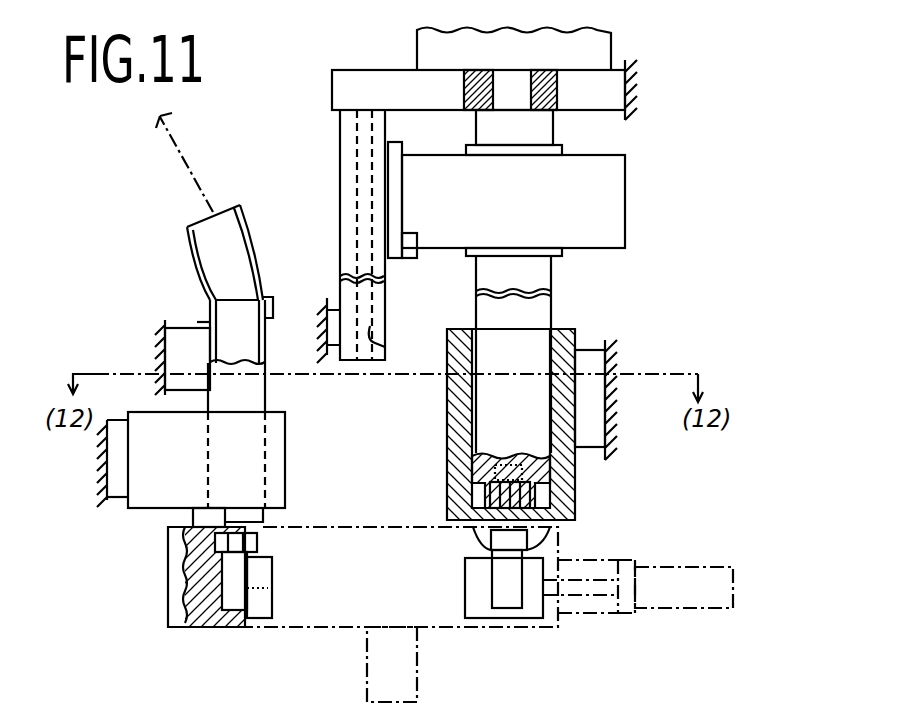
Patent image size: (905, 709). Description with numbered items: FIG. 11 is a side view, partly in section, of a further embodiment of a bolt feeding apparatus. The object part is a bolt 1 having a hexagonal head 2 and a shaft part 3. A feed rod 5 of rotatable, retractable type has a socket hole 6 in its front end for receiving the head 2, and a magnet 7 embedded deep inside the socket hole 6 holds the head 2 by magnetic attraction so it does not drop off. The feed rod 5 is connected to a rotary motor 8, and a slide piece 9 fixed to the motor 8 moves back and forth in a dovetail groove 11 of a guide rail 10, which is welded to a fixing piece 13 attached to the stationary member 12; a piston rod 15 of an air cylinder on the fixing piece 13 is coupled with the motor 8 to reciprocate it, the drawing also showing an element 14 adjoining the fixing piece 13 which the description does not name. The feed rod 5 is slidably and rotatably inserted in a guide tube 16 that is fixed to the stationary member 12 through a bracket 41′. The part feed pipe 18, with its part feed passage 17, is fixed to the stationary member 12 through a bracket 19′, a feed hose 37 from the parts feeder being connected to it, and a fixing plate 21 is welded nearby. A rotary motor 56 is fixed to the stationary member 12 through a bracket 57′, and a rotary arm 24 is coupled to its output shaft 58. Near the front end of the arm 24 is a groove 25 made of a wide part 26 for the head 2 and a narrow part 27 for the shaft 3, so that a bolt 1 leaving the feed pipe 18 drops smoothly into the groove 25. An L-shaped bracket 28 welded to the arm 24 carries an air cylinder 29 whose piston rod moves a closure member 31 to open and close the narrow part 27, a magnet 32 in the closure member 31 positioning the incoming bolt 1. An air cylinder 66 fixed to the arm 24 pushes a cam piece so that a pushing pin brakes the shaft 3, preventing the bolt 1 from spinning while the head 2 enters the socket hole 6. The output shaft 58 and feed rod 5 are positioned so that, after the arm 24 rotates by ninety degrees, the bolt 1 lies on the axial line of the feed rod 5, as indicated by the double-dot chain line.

The bolt 1 is at (269, 548).
The hexagonal head 2 is at (268, 543).
The shaft part 3 is at (230, 605).
The feed rod 5 is at (553, 308).
The socket hole 6 is at (530, 500).
The magnet 7 is at (516, 460).
The rotary motor 8 is at (625, 205).
The slide piece 9 is at (416, 258).
The guide rail 10 is at (387, 303).
The dovetail groove 11 is at (385, 347).
The stationary member 12 is at (633, 105).
The fixing piece 13 is at (332, 88).
The machine frame 14 is at (418, 45).
The piston rod 15 is at (535, 72).
The guide tube 16 is at (447, 428).
The part feed passage 17 is at (248, 340).
The part feed pipe 18 is at (265, 394).
The bracket 19′ is at (197, 327).
The fixing plate 21 is at (178, 337).
The rotary arm 24 is at (168, 588).
The groove 25 is at (273, 588).
The wide part 26 is at (203, 545).
The narrow part 27 is at (248, 610).
The L-shaped bracket 28 is at (588, 615).
The air cylinder 29 is at (698, 562).
The closure member 31 is at (273, 575).
The magnet 32 is at (262, 598).
The feed hose 37 is at (250, 222).
The bracket 41′ is at (600, 350).
The rotary motor 56 is at (285, 452).
The bracket 57′ is at (113, 502).
The output shaft 58 is at (187, 518).
The air cylinder 66 is at (417, 692).